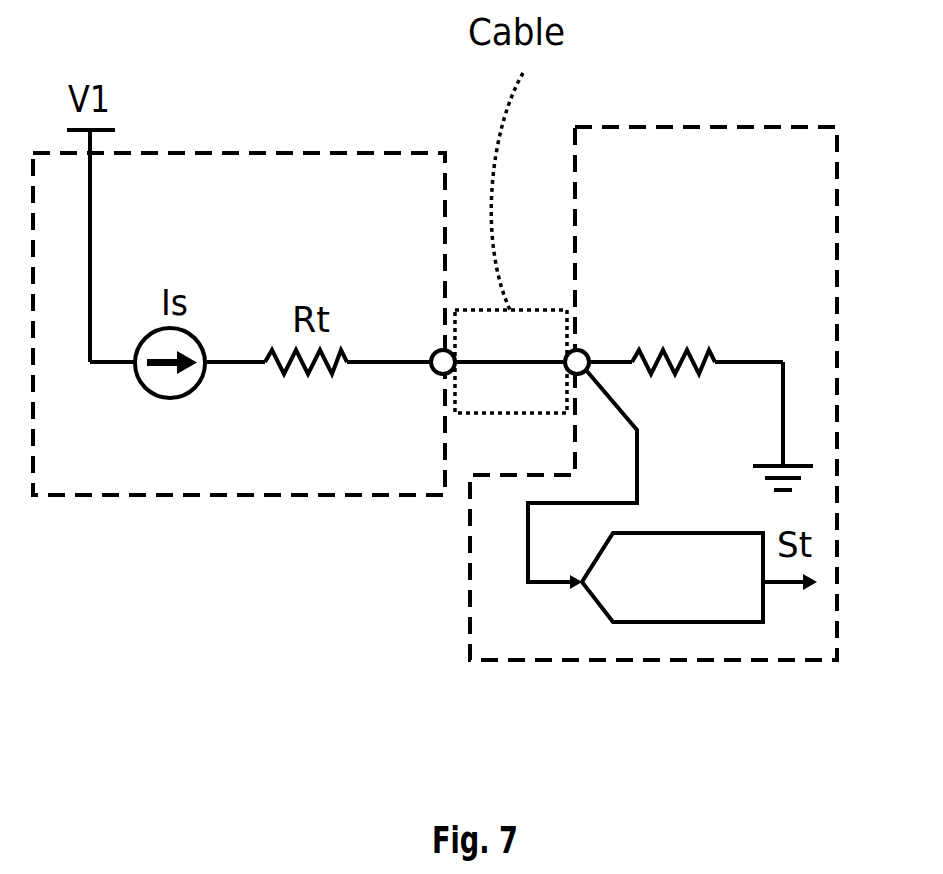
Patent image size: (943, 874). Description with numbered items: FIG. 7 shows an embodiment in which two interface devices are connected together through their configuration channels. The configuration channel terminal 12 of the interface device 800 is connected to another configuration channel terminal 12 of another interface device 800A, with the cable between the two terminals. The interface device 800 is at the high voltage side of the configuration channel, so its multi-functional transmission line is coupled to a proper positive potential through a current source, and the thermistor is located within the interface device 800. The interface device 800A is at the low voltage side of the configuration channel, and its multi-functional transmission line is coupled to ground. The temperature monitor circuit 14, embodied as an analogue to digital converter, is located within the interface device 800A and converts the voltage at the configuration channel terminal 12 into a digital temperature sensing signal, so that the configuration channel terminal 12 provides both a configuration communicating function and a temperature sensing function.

The interface device 800 is at (357, 152).
The interface device 800A is at (655, 127).
The configuration channel terminal 12 is at (432, 357).
The temperature monitor circuit 14 is at (652, 533).